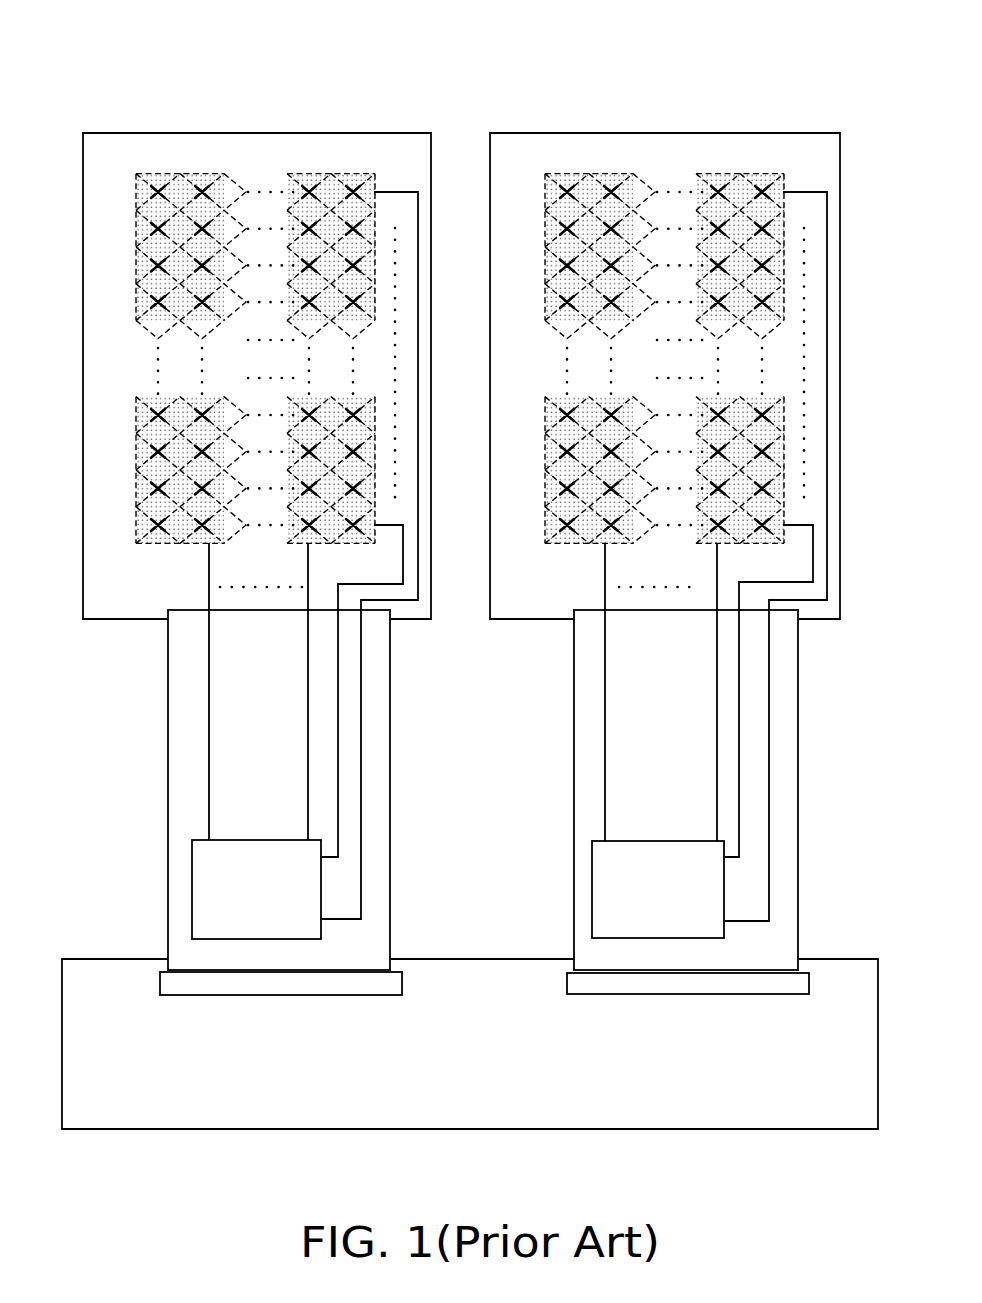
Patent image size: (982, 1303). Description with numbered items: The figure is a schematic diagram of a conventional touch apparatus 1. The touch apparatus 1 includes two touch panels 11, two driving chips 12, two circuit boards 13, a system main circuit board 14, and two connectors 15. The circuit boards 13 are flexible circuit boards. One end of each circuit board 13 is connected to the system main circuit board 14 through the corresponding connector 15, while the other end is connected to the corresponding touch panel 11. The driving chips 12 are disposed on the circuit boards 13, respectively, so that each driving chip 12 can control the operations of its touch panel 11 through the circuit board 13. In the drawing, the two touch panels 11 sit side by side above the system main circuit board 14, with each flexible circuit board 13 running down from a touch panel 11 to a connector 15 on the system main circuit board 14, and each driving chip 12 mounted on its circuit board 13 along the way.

The touch apparatus 1 is at (100, 80).
The touch panel 11 is at (83, 213).
The driving chip 12 is at (192, 885).
The circuit board 13 is at (180, 768).
The system main circuit board 14 is at (700, 1122).
The connector 15 is at (160, 985).